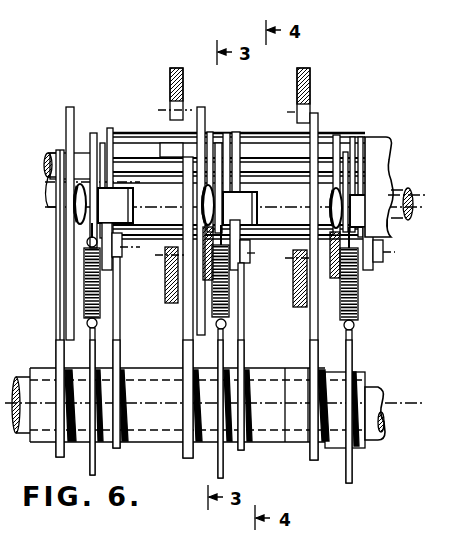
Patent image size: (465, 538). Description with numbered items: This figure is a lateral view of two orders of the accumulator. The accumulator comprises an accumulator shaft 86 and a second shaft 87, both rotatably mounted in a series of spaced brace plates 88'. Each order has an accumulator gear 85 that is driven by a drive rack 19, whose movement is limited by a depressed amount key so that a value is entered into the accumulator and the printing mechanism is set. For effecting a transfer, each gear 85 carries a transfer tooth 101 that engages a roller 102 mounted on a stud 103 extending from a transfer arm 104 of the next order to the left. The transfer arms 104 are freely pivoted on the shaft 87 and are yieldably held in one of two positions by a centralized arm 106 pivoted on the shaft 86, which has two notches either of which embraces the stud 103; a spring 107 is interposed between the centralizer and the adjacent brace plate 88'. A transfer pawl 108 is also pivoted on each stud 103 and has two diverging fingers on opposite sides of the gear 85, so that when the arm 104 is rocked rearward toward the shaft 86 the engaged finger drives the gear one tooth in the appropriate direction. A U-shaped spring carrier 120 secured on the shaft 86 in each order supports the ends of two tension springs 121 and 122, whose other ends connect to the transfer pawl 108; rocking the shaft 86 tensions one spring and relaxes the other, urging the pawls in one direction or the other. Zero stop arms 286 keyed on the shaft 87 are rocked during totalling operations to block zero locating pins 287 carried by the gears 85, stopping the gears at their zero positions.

The accumulator gear 85 is at (255, 137).
The accumulator shaft 86 is at (400, 172).
The second shaft 87 is at (381, 406).
The brace plate 88' is at (288, 406).
The transfer tooth 101 is at (109, 130).
The roller 102 is at (118, 190).
The stud 103 is at (77, 222).
The transfer arm 104 is at (183, 341).
The centralized arm 106 is at (86, 147).
The spring 107 is at (87, 287).
The transfer pawl 108 is at (68, 127).
The U-shaped spring carrier 120 is at (218, 143).
The tension spring 121 is at (190, 157).
The tension spring 122 is at (203, 258).
The drive rack 19 is at (309, 87).
The zero stop arm 286 is at (244, 363).
The zero locating pin 287 is at (249, 258).